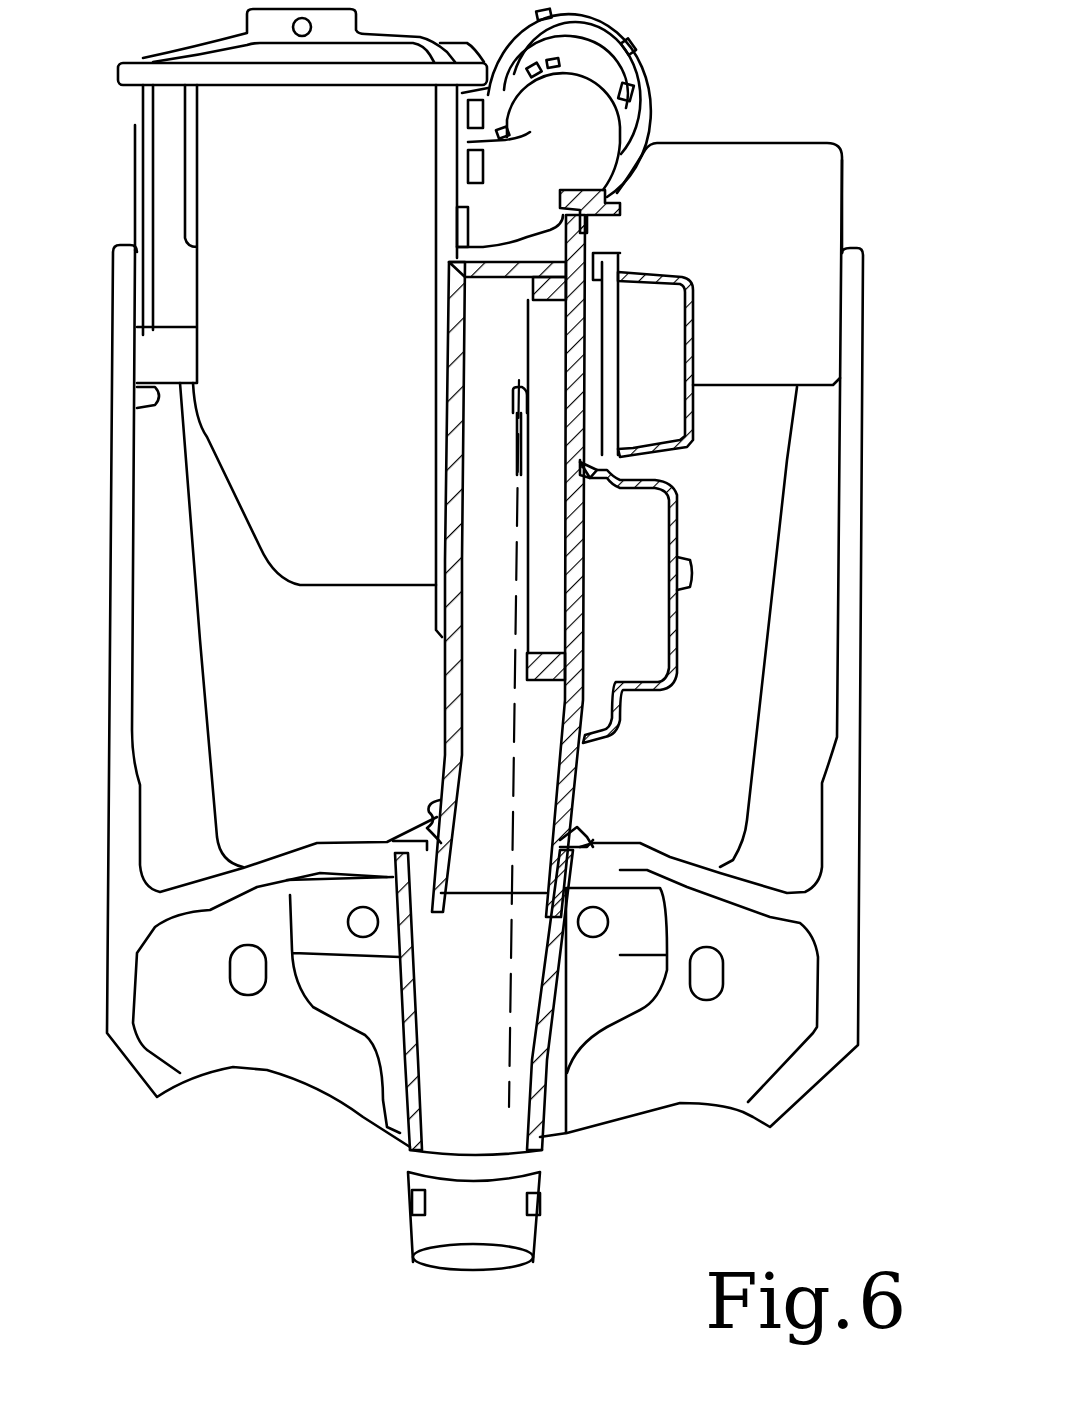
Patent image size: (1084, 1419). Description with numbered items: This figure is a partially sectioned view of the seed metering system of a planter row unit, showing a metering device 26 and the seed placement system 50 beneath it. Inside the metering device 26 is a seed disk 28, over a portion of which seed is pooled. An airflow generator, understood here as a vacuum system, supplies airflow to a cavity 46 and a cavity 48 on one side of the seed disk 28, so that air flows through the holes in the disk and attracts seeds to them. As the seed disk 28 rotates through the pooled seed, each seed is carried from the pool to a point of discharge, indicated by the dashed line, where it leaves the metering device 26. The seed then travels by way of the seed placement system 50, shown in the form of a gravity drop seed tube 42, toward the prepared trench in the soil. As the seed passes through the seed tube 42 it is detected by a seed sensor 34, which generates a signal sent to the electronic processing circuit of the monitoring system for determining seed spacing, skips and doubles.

The metering device 26 is at (822, 82).
The seed disk 28 is at (590, 594).
The seed sensor 34 is at (412, 1200).
The gravity drop seed tube 42 is at (410, 1233).
The cavity 46 is at (605, 337).
The cavity 48 is at (652, 538).
The seed placement system 50 is at (138, 1167).